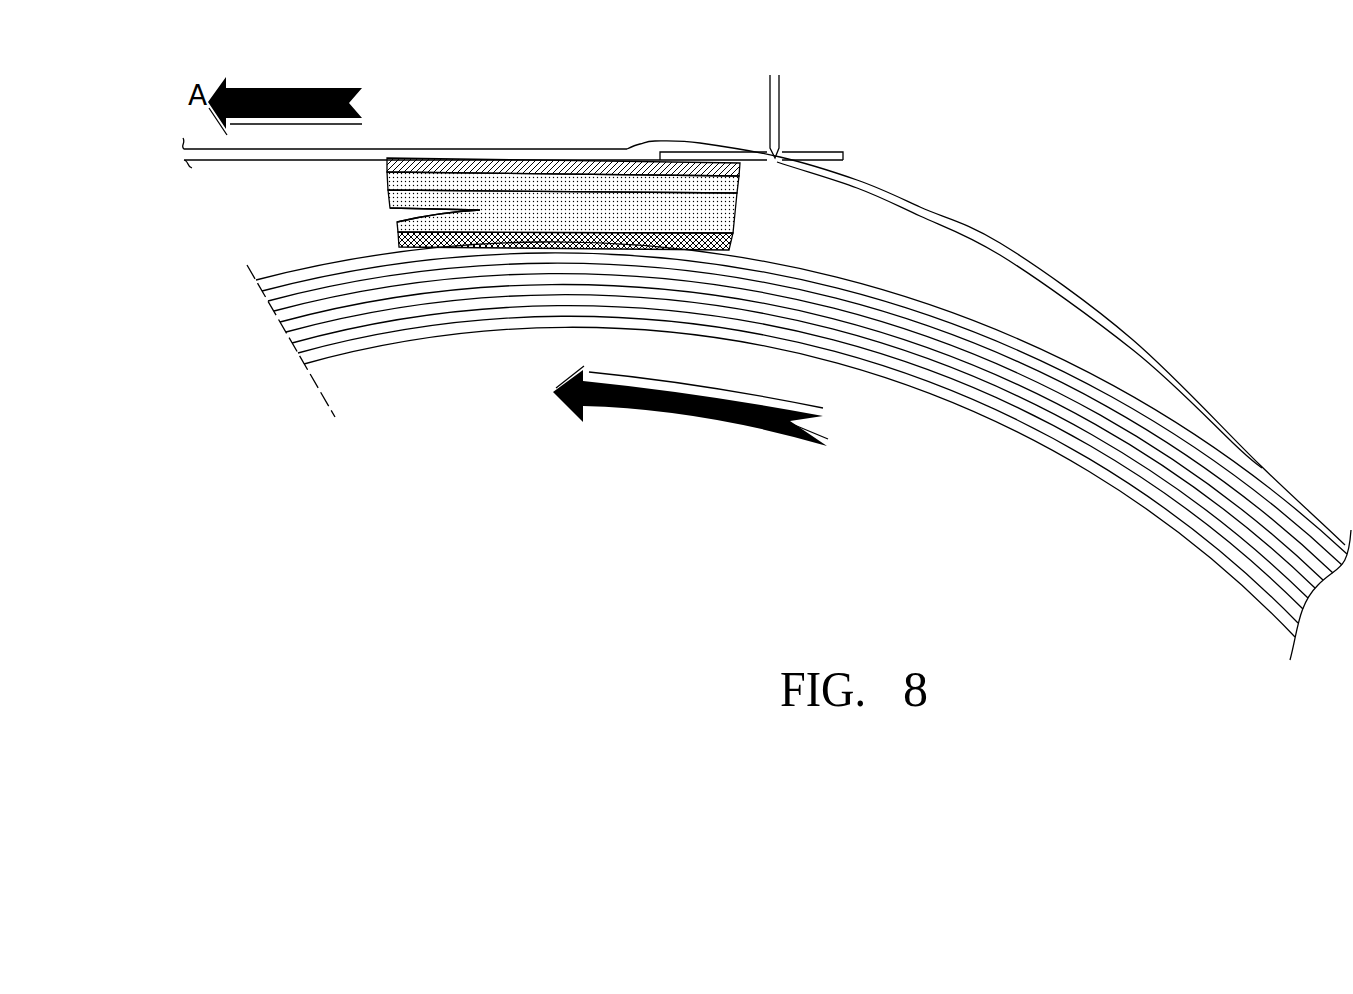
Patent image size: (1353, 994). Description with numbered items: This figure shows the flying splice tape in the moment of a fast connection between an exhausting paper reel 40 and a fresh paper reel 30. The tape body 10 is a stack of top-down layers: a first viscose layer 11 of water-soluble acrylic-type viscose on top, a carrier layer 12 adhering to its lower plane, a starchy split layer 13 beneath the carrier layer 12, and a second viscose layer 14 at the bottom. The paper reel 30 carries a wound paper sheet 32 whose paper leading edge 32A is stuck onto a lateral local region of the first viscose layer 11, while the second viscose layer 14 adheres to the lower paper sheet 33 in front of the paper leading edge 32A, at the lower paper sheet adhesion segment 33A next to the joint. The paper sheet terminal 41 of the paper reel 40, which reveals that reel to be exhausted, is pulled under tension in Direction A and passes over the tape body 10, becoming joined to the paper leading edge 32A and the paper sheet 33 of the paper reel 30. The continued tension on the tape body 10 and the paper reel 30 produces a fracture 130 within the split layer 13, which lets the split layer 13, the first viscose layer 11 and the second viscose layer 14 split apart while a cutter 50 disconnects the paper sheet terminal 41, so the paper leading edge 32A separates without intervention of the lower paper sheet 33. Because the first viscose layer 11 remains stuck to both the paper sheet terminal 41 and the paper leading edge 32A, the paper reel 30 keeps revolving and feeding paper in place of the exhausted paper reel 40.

The tape body 10 is at (538, 213).
The first viscose layer 11 is at (739, 180).
The carrier layer 12 is at (734, 197).
The split layer 13 is at (731, 218).
The second viscose layer 14 is at (729, 249).
The fracture 130 is at (378, 225).
The paper reel 30 is at (769, 400).
The paper sheet 32 is at (923, 210).
The paper leading edge 32A is at (697, 163).
The lower paper sheet 33 is at (769, 436).
The lower paper sheet adhesion segment 33A is at (505, 232).
The paper reel 40 is at (384, 139).
The paper sheet terminal 41 is at (547, 150).
The cutter 50 is at (780, 107).